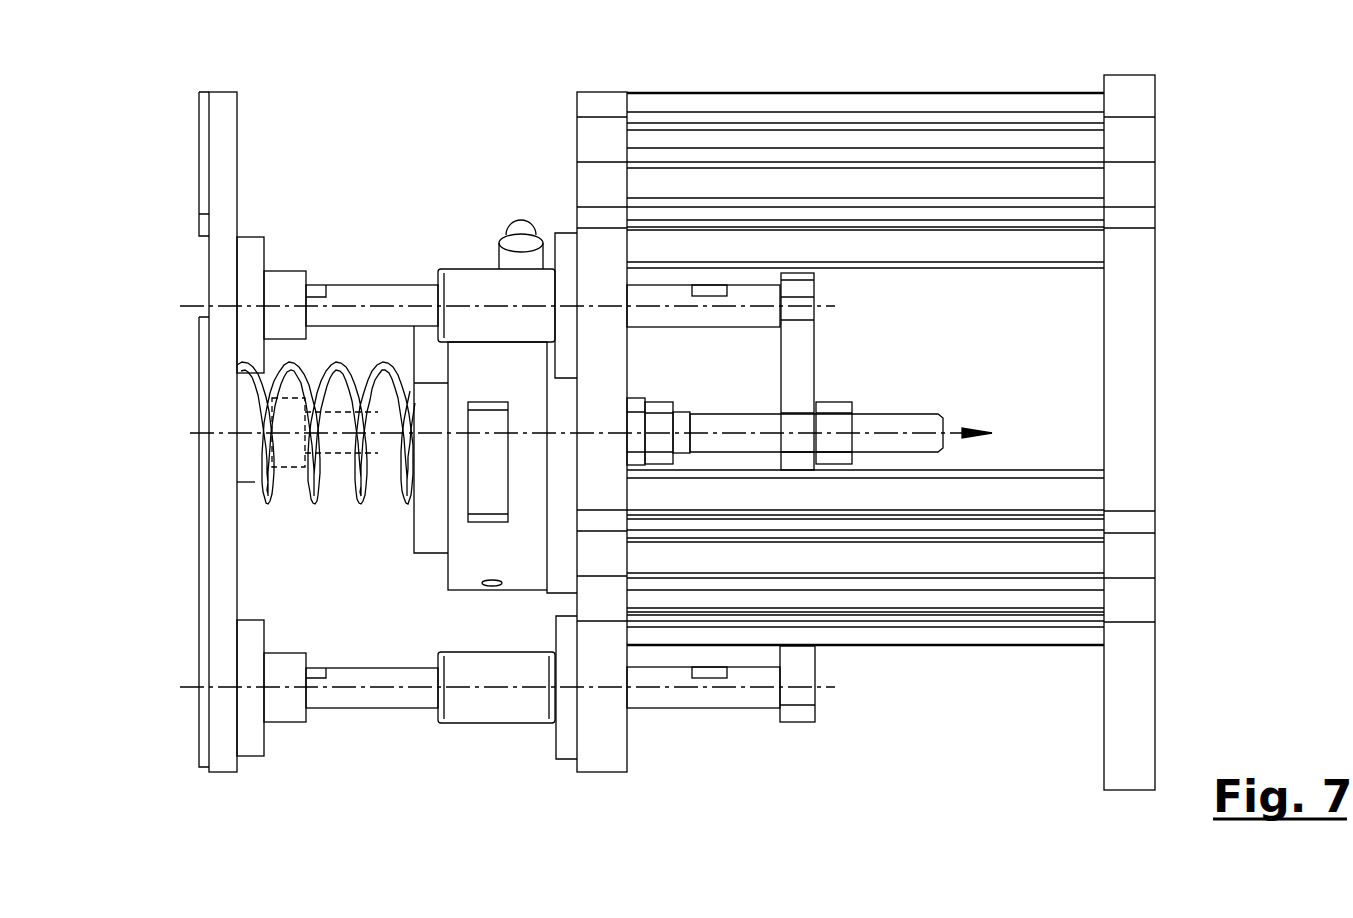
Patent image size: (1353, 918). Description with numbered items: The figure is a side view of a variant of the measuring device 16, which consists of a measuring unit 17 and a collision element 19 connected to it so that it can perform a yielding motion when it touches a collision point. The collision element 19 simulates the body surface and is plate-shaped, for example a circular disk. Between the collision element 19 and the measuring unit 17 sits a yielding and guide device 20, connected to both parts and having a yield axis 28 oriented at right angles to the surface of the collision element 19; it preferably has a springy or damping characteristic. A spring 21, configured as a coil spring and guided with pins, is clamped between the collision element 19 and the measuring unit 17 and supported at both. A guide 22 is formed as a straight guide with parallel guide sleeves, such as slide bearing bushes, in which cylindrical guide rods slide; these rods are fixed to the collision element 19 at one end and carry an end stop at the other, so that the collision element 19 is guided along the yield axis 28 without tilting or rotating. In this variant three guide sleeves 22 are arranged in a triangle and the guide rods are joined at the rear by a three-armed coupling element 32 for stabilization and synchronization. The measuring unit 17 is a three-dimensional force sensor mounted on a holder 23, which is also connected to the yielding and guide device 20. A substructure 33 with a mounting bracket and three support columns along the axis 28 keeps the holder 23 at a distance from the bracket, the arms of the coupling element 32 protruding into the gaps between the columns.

The measuring device 16 is at (126, 172).
The measuring unit 17 is at (523, 558).
The collision element 19 is at (216, 545).
The yielding and guide device 20 is at (492, 755).
The spring 21 is at (315, 503).
The guide sleeve 22 is at (458, 295).
The holder 23 is at (594, 745).
The yield axis 28 is at (953, 430).
The coupling element 32 is at (798, 357).
The substructure 33 is at (932, 680).